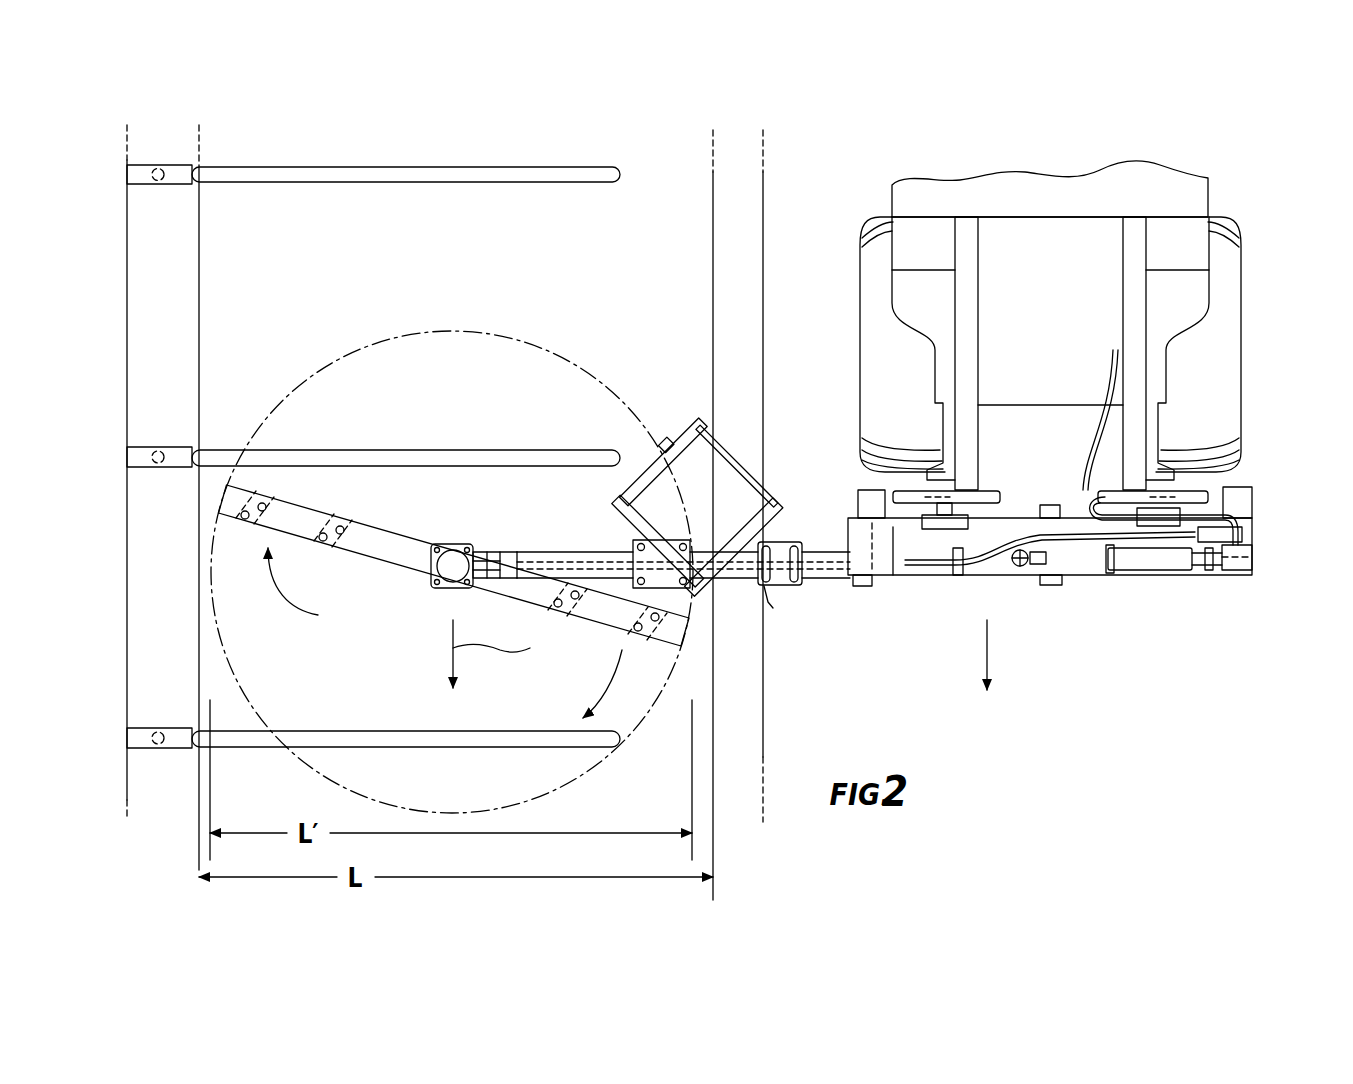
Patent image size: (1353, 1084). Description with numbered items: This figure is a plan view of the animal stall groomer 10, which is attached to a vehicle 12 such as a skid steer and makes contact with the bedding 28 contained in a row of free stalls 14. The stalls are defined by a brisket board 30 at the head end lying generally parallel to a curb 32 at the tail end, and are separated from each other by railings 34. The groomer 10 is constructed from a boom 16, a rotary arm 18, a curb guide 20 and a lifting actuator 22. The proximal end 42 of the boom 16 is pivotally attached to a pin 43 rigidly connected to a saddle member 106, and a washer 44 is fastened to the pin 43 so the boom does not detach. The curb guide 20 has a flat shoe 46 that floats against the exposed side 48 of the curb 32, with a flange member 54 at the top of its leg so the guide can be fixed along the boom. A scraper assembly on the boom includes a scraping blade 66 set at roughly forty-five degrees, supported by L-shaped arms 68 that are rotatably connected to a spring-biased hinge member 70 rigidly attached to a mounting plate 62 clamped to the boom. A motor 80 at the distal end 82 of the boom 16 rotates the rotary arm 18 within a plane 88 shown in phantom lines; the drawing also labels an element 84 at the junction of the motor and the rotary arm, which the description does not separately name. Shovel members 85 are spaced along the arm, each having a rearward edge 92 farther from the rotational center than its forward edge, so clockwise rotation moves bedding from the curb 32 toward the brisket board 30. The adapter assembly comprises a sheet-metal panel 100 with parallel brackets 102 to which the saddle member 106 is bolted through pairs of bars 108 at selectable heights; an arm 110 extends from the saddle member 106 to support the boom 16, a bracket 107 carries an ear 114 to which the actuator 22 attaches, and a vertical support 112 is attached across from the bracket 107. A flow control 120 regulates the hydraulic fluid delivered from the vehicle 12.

The animal stall groomer 10 is at (817, 632).
The vehicle 12 is at (1192, 190).
The free stalls 14 is at (487, 266).
The boom 16 is at (920, 580).
The rotary arm 18 is at (368, 552).
The curb guide 20 is at (790, 532).
The lifting actuator 22 is at (1150, 562).
The bedding 28 is at (253, 285).
The brisket board 30 is at (150, 353).
The curb 32 is at (737, 242).
The railings 34 is at (430, 170).
The proximal end 42 is at (1070, 572).
The pin 43 is at (1090, 527).
The washer 44 is at (266, 505).
The shoe 46 is at (768, 594).
The exposed side of curb 48 is at (768, 713).
The flange member 54 is at (787, 586).
The mounting plate 62 is at (655, 530).
The scraping blade 66 is at (742, 495).
The L-shaped arms 68 is at (655, 448).
The hinge member 70 is at (622, 610).
The motor 80 is at (458, 556).
The distal end 82 is at (503, 545).
The hub 84 is at (440, 546).
The shovel members 85 is at (322, 532).
The plane 88 is at (325, 350).
The rearward edge 92 is at (230, 518).
The panel 100 is at (893, 490).
The brackets 102 is at (975, 505).
The saddle member 106 is at (893, 535).
The bracket 107 is at (1240, 570).
The bars 108 is at (1040, 510).
The arm 110 is at (862, 588).
The vertical support 112 is at (1240, 500).
The ear 114 is at (1235, 572).
The flow control 120 is at (1235, 537).